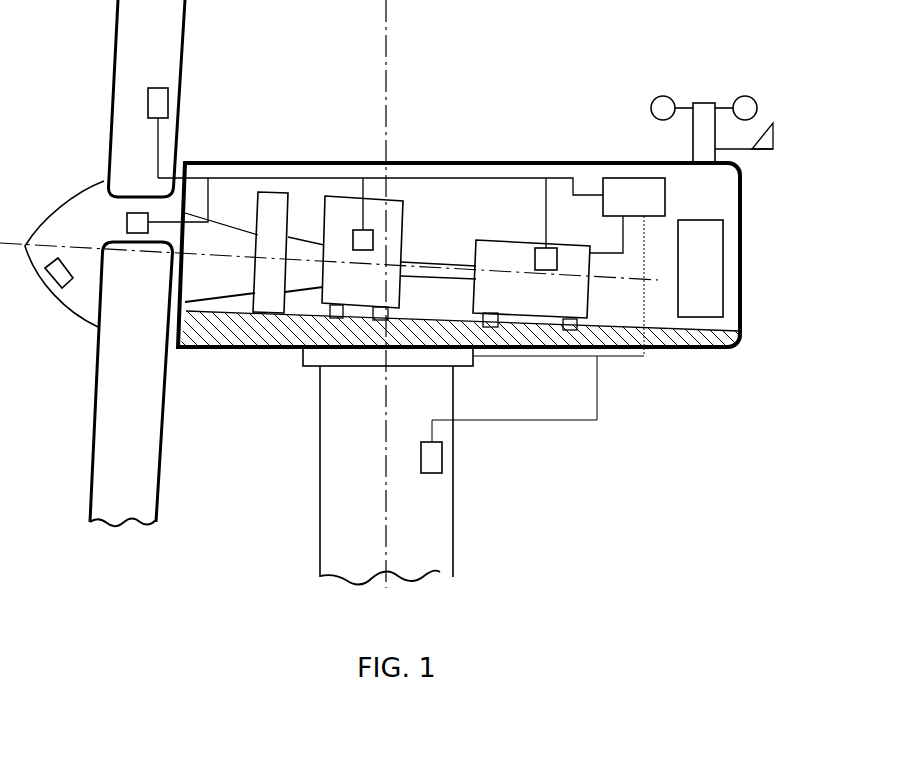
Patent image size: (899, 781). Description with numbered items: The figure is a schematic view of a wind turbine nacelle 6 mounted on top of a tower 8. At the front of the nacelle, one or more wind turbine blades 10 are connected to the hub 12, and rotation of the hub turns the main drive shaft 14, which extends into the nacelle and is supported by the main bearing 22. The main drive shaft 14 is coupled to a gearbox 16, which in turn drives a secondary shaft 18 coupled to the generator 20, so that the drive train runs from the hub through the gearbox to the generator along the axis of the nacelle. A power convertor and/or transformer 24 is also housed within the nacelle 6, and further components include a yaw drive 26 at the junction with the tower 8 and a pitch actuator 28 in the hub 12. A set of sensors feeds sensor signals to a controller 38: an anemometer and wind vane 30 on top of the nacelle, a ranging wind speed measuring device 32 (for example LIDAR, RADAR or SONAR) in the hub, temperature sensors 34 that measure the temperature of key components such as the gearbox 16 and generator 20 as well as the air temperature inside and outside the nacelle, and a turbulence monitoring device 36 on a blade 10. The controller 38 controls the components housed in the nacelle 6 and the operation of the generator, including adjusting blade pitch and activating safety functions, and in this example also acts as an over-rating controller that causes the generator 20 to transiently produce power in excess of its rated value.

The wind turbine nacelle 6 is at (755, 316).
The tower 8 is at (453, 541).
The wind turbine blades 10 is at (118, 15).
The hub 12 is at (72, 200).
The main drive shaft 14 is at (233, 220).
The gearbox 16 is at (345, 196).
The secondary shaft 18 is at (440, 263).
The generator 20 is at (497, 240).
The main bearing 22 is at (275, 192).
The power convertor and/or transformer 24 is at (723, 235).
The yaw drive 26 is at (476, 367).
The pitch actuator 28 is at (127, 221).
The anemometer and wind vane 30 is at (706, 103).
The ranging wind speed measuring device 32 is at (52, 280).
The temperature sensor 34 is at (361, 250).
The turbulence monitoring device 36 is at (168, 100).
The controller 38 is at (625, 178).